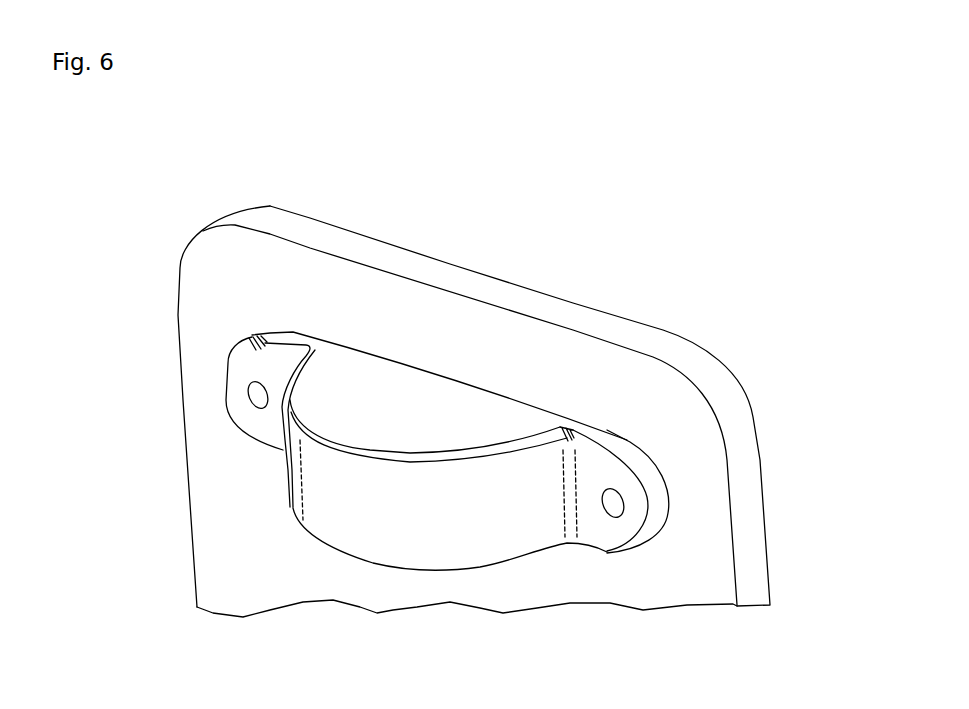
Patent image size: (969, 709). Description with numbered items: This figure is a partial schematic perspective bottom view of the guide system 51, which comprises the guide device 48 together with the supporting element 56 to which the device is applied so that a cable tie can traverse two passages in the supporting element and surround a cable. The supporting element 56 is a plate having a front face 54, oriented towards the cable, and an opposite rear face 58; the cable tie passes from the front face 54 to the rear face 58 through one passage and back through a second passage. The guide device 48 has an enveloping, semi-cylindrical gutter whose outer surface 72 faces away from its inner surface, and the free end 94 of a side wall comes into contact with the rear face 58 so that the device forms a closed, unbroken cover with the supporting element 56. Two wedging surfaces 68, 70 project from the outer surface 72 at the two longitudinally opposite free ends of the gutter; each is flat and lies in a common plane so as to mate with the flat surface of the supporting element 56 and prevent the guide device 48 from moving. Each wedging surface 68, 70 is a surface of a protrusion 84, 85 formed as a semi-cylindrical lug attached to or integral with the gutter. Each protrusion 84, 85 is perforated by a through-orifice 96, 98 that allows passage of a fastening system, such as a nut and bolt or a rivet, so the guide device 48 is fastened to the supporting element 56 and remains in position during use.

The guide device 48 is at (290, 490).
The guide system 51 is at (668, 272).
The front face 54 is at (450, 262).
The supporting element 56 is at (202, 272).
The rear face 58 is at (533, 343).
The wedging surface 68 is at (295, 335).
The wedging surface 70 is at (630, 440).
The outer surface 72 is at (387, 517).
The protrusion 84 is at (263, 365).
The protrusion 85 is at (628, 506).
The free end 94 is at (363, 345).
The through-orifice 96 is at (257, 398).
The through-orifice 98 is at (615, 520).